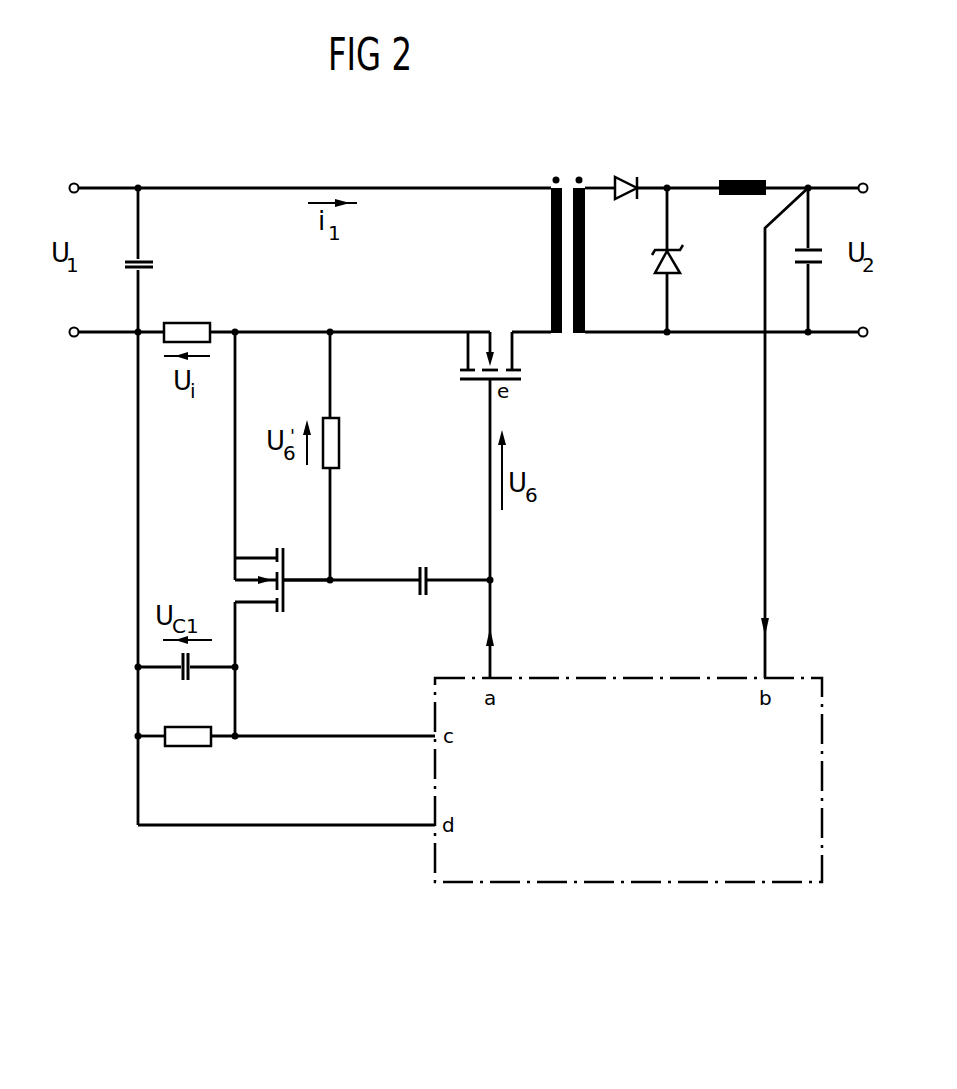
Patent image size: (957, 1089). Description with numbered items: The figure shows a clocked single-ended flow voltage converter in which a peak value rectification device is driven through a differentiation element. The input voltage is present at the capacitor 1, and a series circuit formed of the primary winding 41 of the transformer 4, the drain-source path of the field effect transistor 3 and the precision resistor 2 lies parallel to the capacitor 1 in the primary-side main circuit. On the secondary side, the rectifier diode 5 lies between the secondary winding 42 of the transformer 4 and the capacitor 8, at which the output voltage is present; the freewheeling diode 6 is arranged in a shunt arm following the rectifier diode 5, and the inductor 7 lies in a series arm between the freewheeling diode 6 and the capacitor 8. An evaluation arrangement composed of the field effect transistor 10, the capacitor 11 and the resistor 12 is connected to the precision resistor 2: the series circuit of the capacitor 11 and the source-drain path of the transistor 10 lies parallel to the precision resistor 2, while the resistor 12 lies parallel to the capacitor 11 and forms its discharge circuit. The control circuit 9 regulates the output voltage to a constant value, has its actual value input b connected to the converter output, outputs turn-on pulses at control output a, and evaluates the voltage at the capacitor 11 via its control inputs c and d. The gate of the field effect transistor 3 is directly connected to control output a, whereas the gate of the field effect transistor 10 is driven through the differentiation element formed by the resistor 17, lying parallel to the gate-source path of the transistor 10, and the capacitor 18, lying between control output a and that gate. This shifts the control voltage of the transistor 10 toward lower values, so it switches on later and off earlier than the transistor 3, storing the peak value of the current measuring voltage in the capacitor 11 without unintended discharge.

The capacitor 1 is at (150, 258).
The precision resistor 2 is at (185, 322).
The field effect transistor 3 is at (498, 366).
The transformer 4 is at (566, 336).
The primary winding 41 is at (551, 232).
The secondary winding 42 is at (585, 280).
The rectifier diode 5 is at (630, 178).
The freewheeling diode 6 is at (682, 262).
The inductor 7 is at (740, 180).
The capacitor 8 is at (812, 263).
The control circuit 9 is at (648, 882).
The field effect transistor 10 is at (290, 600).
The capacitor 11 is at (190, 676).
The resistor 12 is at (187, 747).
The resistor 17 is at (340, 440).
The capacitor 18 is at (416, 572).